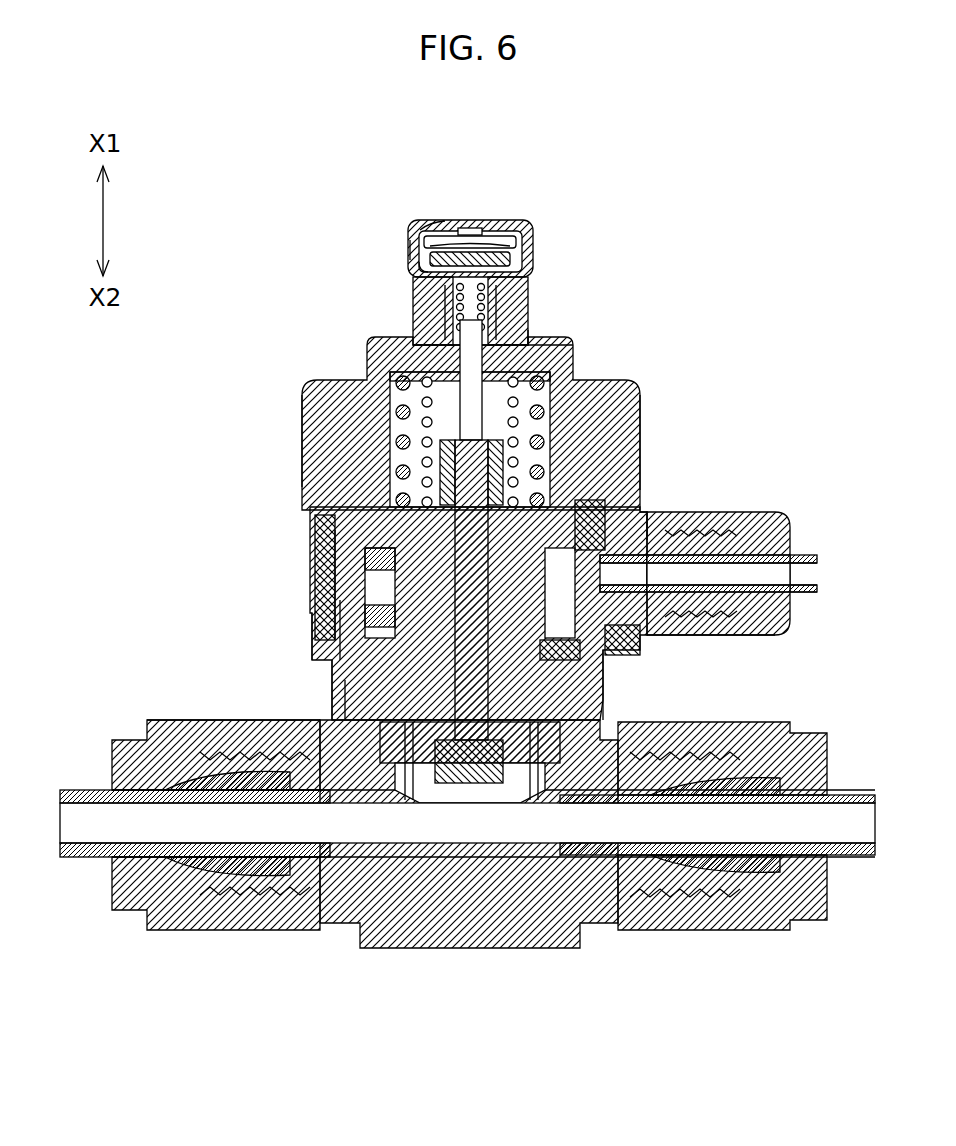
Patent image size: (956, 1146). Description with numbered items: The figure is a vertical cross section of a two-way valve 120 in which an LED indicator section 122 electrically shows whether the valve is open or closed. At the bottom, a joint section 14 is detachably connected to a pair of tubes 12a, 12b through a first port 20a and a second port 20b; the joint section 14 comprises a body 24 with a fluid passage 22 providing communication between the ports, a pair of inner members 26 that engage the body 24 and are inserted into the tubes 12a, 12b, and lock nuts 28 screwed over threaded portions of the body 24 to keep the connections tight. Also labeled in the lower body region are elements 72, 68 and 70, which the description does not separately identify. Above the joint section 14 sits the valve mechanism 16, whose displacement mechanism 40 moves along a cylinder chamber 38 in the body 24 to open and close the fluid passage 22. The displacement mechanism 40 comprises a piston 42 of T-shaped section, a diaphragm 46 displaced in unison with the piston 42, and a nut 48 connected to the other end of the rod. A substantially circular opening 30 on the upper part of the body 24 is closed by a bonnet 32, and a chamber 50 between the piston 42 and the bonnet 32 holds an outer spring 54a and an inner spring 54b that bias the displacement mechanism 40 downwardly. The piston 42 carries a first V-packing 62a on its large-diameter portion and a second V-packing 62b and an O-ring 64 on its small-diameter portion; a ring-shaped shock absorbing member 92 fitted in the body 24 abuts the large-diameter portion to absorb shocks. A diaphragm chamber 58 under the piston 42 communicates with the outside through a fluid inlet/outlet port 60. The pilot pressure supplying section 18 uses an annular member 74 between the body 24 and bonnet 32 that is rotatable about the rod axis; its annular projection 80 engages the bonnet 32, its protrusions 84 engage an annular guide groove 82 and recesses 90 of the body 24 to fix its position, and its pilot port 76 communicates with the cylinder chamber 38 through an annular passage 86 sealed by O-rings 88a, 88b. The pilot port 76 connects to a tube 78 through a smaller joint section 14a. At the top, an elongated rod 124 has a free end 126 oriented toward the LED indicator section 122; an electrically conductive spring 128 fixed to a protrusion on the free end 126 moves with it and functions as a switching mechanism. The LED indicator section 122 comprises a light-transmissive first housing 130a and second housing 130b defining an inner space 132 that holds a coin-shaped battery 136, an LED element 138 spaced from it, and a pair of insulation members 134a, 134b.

The two-way valve 120 is at (768, 195).
The LED indicator section 122 is at (530, 228).
The coin-shaped battery 136 is at (512, 240).
The insulation member 134a is at (520, 248).
The insulation member 134b is at (515, 258).
The LED element 138 is at (470, 229).
The first housing 130a is at (432, 226).
The inner space 132 is at (413, 242).
The second housing 130b is at (424, 268).
The free end 126 is at (428, 330).
The spring 128 is at (505, 285).
The displacement mechanism 40 is at (630, 385).
The bonnet 32 is at (590, 355).
The outer spring 54a is at (560, 345).
The inner spring 54b is at (535, 330).
The piston 42 is at (625, 420).
The chamber 50 is at (395, 365).
The nut 48 is at (350, 405).
The opening 30 is at (400, 390).
The annular member 74 is at (360, 560).
The first V-packing 62a is at (447, 470).
The valve mechanism 16 is at (476, 420).
The second V-packing 62b is at (445, 560).
The annular projection 80 is at (580, 470).
The shock absorbing member 92 is at (320, 525).
The annular passage 86 is at (350, 540).
The O-ring 88a is at (372, 560).
The O-ring 88b is at (375, 600).
The protrusions 84 is at (350, 615).
The recesses 90 is at (330, 640).
The diaphragm chamber 58 is at (340, 660).
The fluid inlet/outlet port 60 is at (345, 690).
The cylinder chamber 38 is at (560, 650).
The annular guide groove 82 is at (625, 640).
The O-ring 64 is at (590, 700).
The pilot pressure supplying section 18 is at (720, 515).
The elongated rod 124 is at (690, 512).
The pilot port 76 is at (808, 565).
The tube 78 is at (808, 590).
The joint section 14a is at (790, 628).
The body 24 is at (380, 850).
The joint section 14 is at (680, 930).
The valve seat 72 is at (405, 760).
The fluid passage 22 is at (500, 800).
The diaphragm 46 is at (470, 790).
The inlet passage 68 is at (420, 790).
The outlet passage 70 is at (545, 790).
The first port 20a is at (180, 885).
The lock nuts 28 is at (200, 735).
The inner members 26 is at (215, 875).
The tube 12a is at (75, 860).
The second port 20b is at (760, 870).
The tube 12b is at (870, 790).